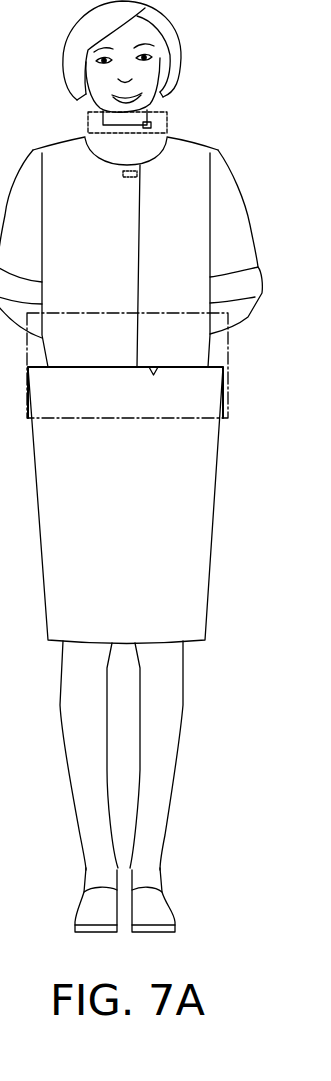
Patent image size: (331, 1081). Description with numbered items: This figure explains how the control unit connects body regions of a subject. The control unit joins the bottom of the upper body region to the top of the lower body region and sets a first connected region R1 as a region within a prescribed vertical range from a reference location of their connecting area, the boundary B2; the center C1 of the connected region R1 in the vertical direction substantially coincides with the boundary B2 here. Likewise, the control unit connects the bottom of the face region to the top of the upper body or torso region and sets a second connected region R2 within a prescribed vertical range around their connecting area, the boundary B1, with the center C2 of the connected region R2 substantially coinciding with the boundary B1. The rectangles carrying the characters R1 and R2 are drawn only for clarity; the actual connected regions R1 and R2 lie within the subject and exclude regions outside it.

The second connected region R2 is at (166, 115).
The boundary B1 is at (203, 128).
The center C2 is at (152, 126).
The first connected region R1 is at (230, 397).
The center C1 is at (213, 367).
The boundary B2 is at (156, 366).